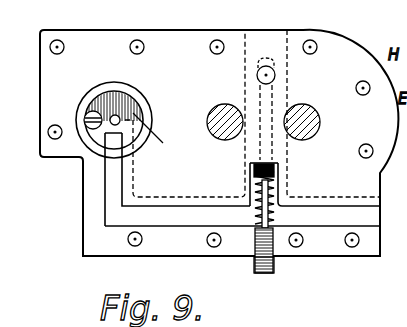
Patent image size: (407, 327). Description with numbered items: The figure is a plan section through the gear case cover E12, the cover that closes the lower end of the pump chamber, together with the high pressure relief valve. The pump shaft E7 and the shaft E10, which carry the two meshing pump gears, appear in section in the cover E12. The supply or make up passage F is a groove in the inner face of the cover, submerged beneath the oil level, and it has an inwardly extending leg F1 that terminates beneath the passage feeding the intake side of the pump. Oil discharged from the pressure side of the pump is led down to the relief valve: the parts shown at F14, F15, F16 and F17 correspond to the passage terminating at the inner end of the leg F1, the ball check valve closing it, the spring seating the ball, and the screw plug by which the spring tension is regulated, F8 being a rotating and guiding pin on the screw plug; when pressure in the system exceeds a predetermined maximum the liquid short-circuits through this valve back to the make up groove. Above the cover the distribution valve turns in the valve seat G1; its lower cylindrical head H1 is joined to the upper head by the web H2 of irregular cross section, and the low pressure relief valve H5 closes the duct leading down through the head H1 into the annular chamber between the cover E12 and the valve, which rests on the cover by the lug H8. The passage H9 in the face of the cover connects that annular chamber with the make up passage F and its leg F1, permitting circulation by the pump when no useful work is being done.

The distribution valve seat G1 is at (88, 97).
The low pressure relief valve H5 is at (97, 108).
The web H2 is at (138, 95).
The lug H8 is at (115, 114).
The lower cylindrical head H1 is at (158, 134).
The pump shaft E7 is at (223, 117).
The shaft E10 is at (302, 115).
The pivot roller F14 is at (268, 98).
The spring cap F15 is at (256, 168).
The leg F1 is at (272, 188).
The passage H9 is at (112, 177).
The cover E12 is at (93, 237).
The rotating and guiding pin F8 is at (247, 198).
The rod F16 is at (262, 197).
The threaded adjusting nut F17 is at (277, 267).
The supply or make up passage F is at (358, 218).